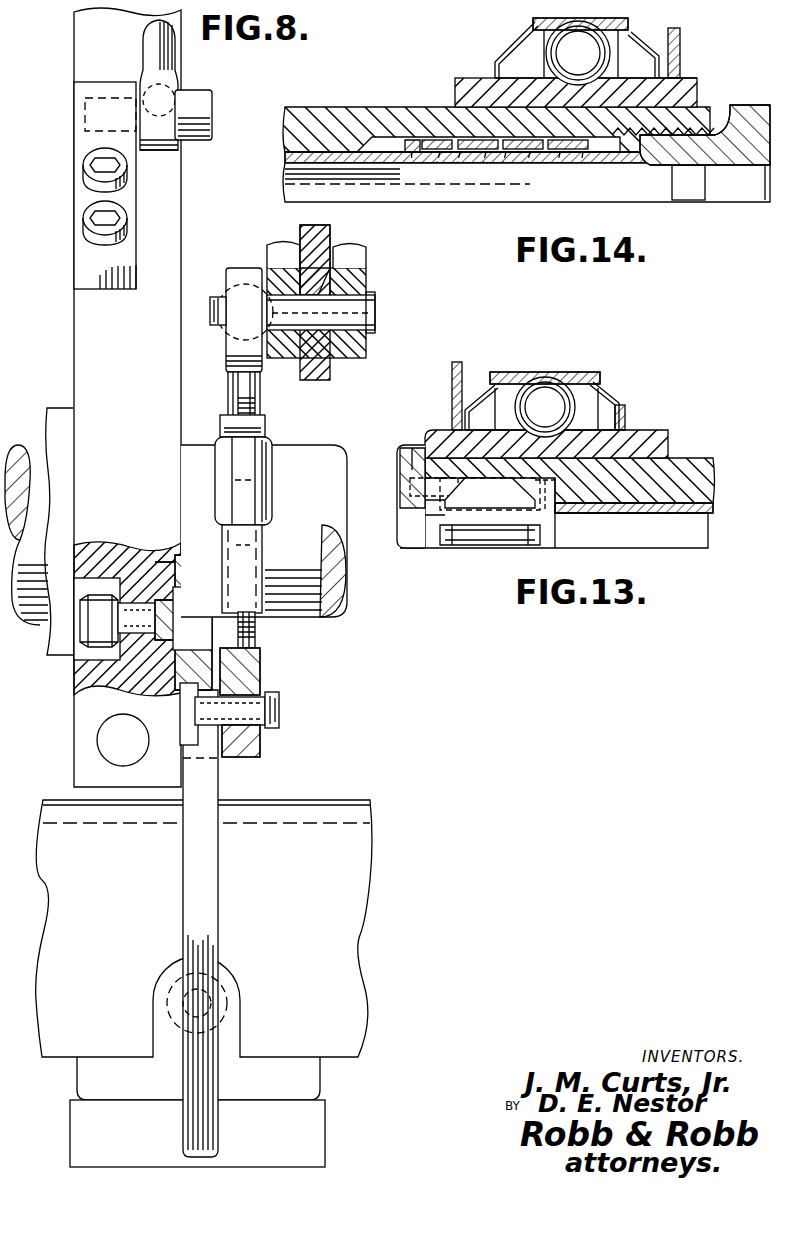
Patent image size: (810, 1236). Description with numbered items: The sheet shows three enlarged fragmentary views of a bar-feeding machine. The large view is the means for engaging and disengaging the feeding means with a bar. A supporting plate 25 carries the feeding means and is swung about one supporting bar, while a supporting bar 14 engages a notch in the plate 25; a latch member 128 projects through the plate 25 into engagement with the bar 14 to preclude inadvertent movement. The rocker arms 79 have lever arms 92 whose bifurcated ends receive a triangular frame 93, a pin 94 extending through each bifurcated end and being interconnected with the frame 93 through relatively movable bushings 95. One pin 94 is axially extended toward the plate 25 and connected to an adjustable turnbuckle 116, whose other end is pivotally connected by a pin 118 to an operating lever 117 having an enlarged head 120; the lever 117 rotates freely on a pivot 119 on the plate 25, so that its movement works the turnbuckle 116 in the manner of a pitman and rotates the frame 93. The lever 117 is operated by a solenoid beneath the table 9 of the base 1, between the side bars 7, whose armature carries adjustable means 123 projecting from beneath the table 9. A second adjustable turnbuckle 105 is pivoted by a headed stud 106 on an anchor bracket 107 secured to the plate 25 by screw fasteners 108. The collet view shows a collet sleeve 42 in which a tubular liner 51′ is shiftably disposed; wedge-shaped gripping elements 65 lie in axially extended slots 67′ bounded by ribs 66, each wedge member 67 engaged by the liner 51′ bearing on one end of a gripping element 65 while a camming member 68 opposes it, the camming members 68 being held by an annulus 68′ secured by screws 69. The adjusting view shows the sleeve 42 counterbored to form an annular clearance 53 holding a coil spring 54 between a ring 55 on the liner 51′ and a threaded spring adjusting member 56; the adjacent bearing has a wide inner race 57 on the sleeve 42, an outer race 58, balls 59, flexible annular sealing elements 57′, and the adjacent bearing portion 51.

In FIG. 8, the base 1 is at (362, 942).
In FIG. 8, the side bars 7 is at (370, 852).
In FIG. 8, the table 9 is at (303, 797).
In FIG. 8, the supporting bar 14 is at (325, 447).
In FIG. 8, the supporting plate 25 is at (181, 232).
In FIG. 14, the collet sleeve 42 is at (312, 107).
In FIG. 13, the collet sleeve 42 is at (713, 482).
In FIG. 14, the guide shoe 51 is at (544, 165).
In FIG. 13, the tubular pusher or liner 51′ is at (705, 512).
In FIG. 14, the annular clearance 53 is at (378, 145).
In FIG. 14, the coil spring 54 is at (410, 163).
In FIG. 14, the ring 55 is at (415, 140).
In FIG. 14, the spring adjusting member 56 is at (748, 105).
In FIG. 14, the inner race 57 is at (690, 80).
In FIG. 13, the inner race 57 is at (668, 442).
In FIG. 14, the annular sealing element 57′ is at (500, 50).
In FIG. 13, the annular sealing element 57′ is at (485, 400).
In FIG. 14, the outer race 58 is at (628, 22).
In FIG. 13, the outer race 58 is at (598, 375).
In FIG. 14, the balls 59 is at (578, 30).
In FIG. 13, the balls 59 is at (545, 385).
In FIG. 13, the gripping elements 65 is at (492, 510).
In FIG. 13, the ribs 66 is at (445, 545).
In FIG. 13, the wedge member 67 is at (545, 490).
In FIG. 13, the slots 67′ is at (400, 460).
In FIG. 13, the camming member 68 is at (425, 505).
In FIG. 13, the annulus 68′ is at (410, 447).
In FIG. 13, the screws 69 is at (410, 485).
In FIG. 8, the rocker arms 79 is at (366, 280).
In FIG. 8, the lever arms 92 is at (330, 248).
In FIG. 8, the triangular frame 93 is at (315, 380).
In FIG. 8, the pin 94 is at (375, 313).
In FIG. 8, the bushings 95 is at (302, 284).
In FIG. 8, the adjustable turnbuckle 105 is at (168, 58).
In FIG. 8, the headed stud 106 is at (204, 92).
In FIG. 8, the anchor bracket 107 is at (83, 150).
In FIG. 8, the screw fasteners 108 is at (88, 188).
In FIG. 8, the adjustable turnbuckle 116 is at (292, 505).
In FIG. 8, the operating lever 117 is at (212, 860).
In FIG. 8, the pin 118 is at (279, 712).
In FIG. 8, the pivot 119 is at (198, 590).
In FIG. 8, the enlarged head 120 is at (240, 660).
In FIG. 8, the adjustable means 123 is at (222, 1000).
In FIG. 8, the latch member 128 is at (105, 738).